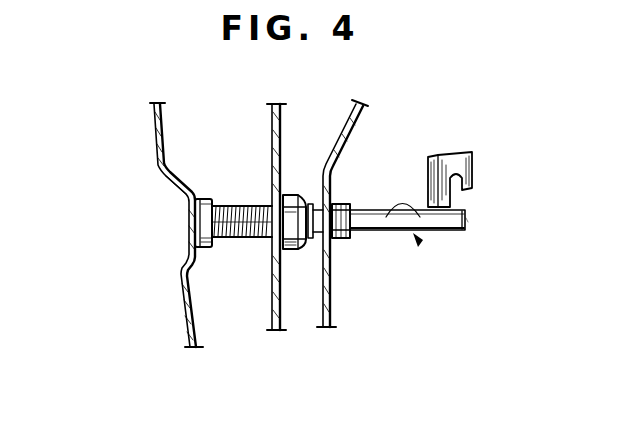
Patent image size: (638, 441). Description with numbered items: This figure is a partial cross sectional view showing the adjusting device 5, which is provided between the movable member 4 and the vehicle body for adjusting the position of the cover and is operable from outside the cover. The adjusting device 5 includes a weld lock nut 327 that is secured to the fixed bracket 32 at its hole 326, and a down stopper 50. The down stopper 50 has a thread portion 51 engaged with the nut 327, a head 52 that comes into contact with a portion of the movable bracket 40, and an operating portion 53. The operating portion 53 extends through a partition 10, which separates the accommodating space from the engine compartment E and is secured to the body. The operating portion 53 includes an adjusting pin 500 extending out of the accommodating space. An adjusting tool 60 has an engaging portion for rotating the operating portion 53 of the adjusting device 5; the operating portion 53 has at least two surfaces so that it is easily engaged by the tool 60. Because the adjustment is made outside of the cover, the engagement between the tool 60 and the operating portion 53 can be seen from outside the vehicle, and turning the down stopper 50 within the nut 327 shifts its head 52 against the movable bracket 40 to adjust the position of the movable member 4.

The movable member 4 is at (146, 131).
The movable bracket 40 is at (176, 182).
The head 52 is at (196, 224).
The thread portion 51 is at (246, 240).
The hole 326 is at (274, 218).
The weld lock nut 327 is at (294, 200).
The fixed bracket 32 is at (302, 102).
The partition 10 is at (316, 304).
The adjusting device 5 is at (366, 188).
The down stopper 50 is at (340, 245).
The adjusting pin 500 is at (383, 238).
The operating portion 53 is at (448, 232).
The adjusting tool 60 is at (457, 160).
The engine compartment E is at (495, 240).